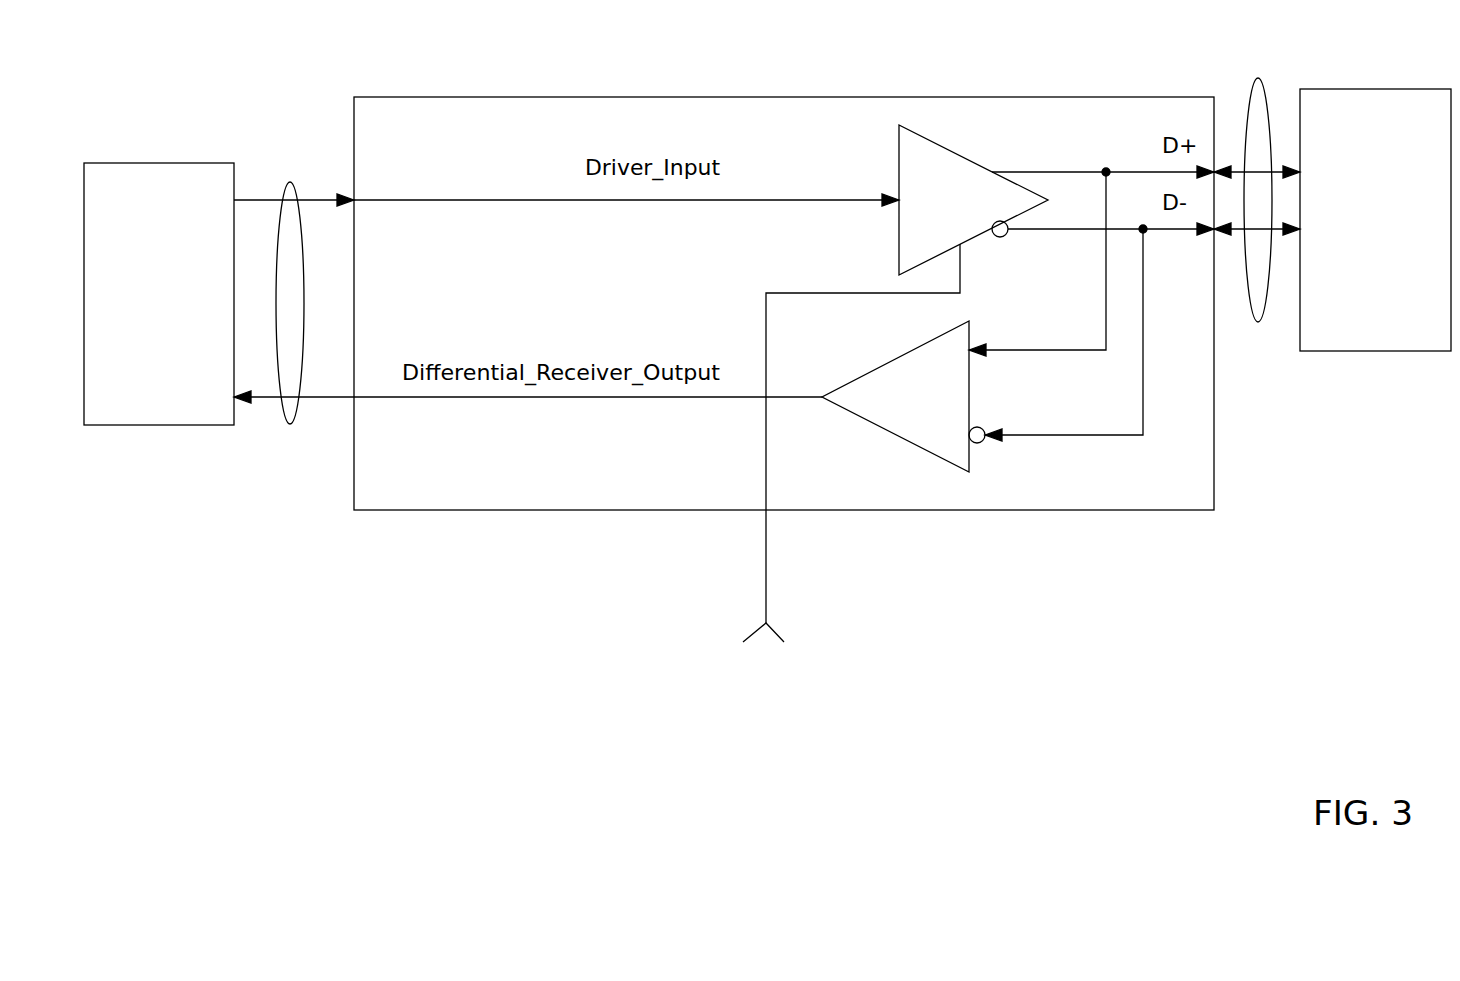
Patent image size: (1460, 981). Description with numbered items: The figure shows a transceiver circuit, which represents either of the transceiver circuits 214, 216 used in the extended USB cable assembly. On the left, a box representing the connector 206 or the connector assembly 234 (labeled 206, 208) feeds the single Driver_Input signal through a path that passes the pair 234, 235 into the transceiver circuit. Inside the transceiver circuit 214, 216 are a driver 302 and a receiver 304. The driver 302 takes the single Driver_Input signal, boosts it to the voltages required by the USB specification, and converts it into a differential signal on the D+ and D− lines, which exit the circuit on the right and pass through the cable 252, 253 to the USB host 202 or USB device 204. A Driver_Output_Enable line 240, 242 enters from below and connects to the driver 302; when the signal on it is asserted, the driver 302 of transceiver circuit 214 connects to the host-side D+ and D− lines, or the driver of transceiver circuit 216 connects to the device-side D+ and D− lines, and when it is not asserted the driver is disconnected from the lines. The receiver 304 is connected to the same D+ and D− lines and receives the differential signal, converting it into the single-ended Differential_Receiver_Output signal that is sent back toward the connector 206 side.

The USB host 202 is at (1375, 220).
The USB device 204 is at (1437, 152).
The connector 206 is at (159, 294).
The device 208 is at (206, 212).
The transceiver circuit 214 is at (784, 303).
The transceiver circuit 216 is at (698, 501).
The connector assembly 234 is at (301, 270).
The pair 235 is at (317, 168).
The Driver_output_enable line 240 is at (735, 443).
The Driver_output_enable line 242 is at (768, 606).
The cable 252 is at (1275, 169).
The cable 253 is at (1264, 88).
The driver 302 is at (968, 214).
The receiver 304 is at (935, 404).